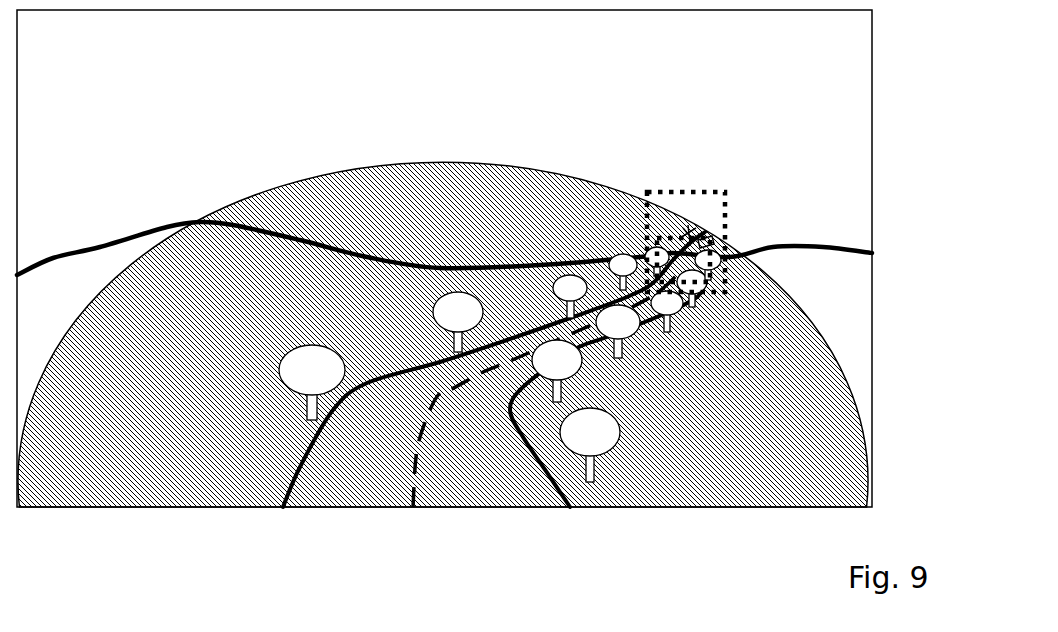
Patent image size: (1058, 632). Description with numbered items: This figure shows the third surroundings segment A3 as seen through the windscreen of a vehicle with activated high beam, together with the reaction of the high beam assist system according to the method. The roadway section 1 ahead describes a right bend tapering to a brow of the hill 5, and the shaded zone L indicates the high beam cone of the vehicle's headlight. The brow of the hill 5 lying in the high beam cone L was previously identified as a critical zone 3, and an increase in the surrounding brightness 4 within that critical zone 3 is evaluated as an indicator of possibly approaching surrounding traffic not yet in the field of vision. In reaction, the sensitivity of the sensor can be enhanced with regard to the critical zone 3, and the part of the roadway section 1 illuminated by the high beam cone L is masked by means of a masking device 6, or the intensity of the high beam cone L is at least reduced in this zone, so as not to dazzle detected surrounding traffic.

The third surroundings segment A3 is at (92, 70).
The high beam cone L is at (97, 300).
The roadway section 1 is at (373, 417).
The critical zone 3 is at (703, 238).
The increase in the surrounding brightness 4 is at (689, 228).
The brow of the hill 5 is at (673, 247).
The masking device 6 is at (683, 236).